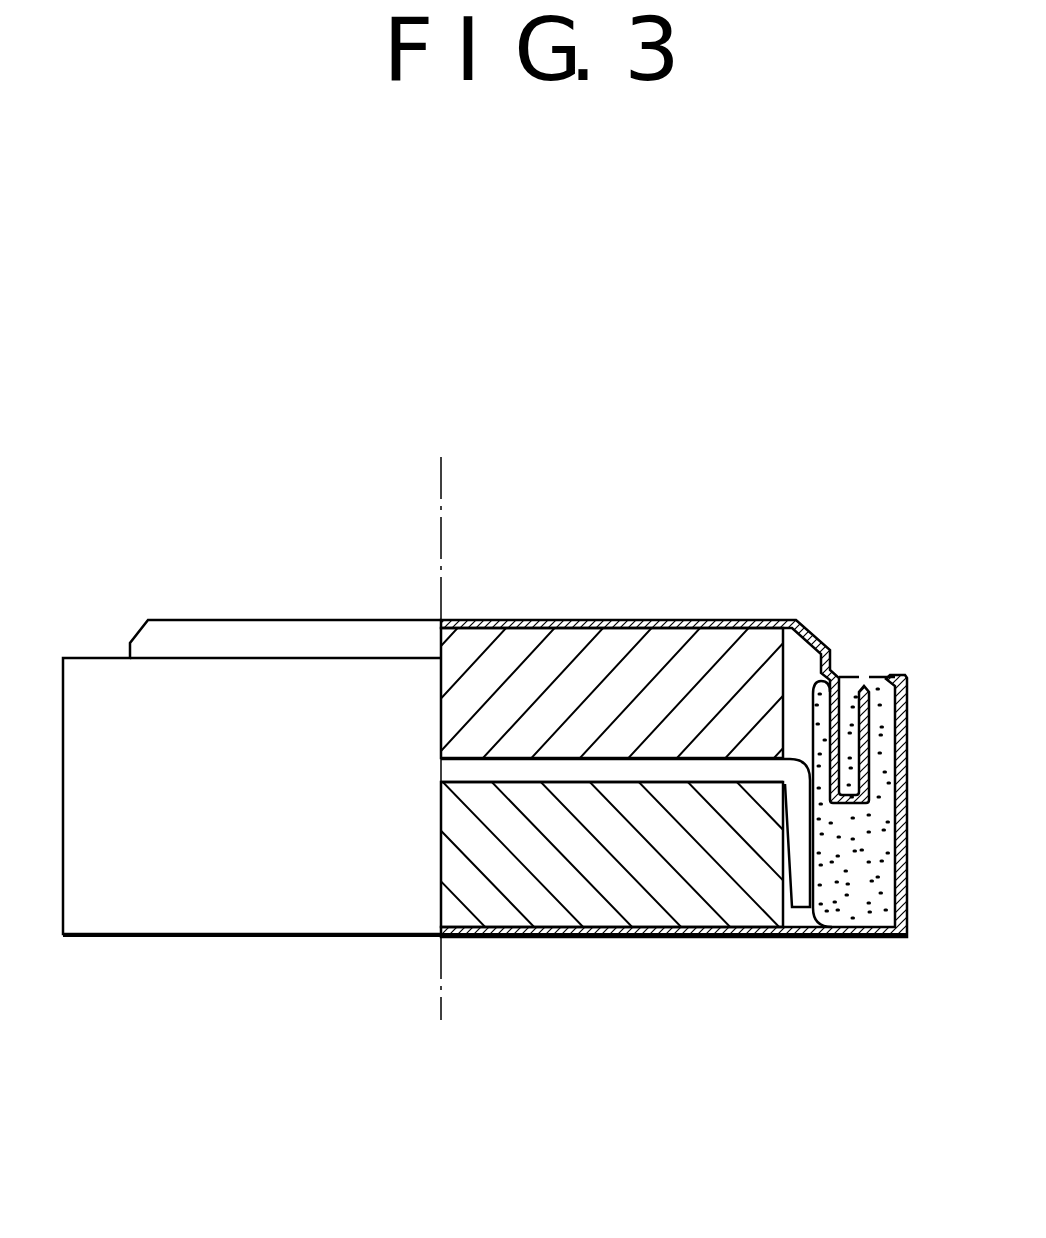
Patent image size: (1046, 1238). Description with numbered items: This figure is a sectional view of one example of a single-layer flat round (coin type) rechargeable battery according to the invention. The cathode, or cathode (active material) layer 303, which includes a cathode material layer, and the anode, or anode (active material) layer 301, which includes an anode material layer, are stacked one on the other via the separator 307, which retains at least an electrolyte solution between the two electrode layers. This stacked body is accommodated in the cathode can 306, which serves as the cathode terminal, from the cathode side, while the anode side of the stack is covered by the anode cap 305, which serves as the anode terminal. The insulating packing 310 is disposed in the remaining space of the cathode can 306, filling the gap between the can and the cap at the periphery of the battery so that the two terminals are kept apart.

The anode (active material) layer 301 is at (570, 652).
The cathode (active material) layer 303 is at (692, 905).
The anode cap 305 is at (497, 620).
The cathode can 306 is at (505, 940).
The separator 307 is at (673, 775).
The insulating packing 310 is at (868, 907).